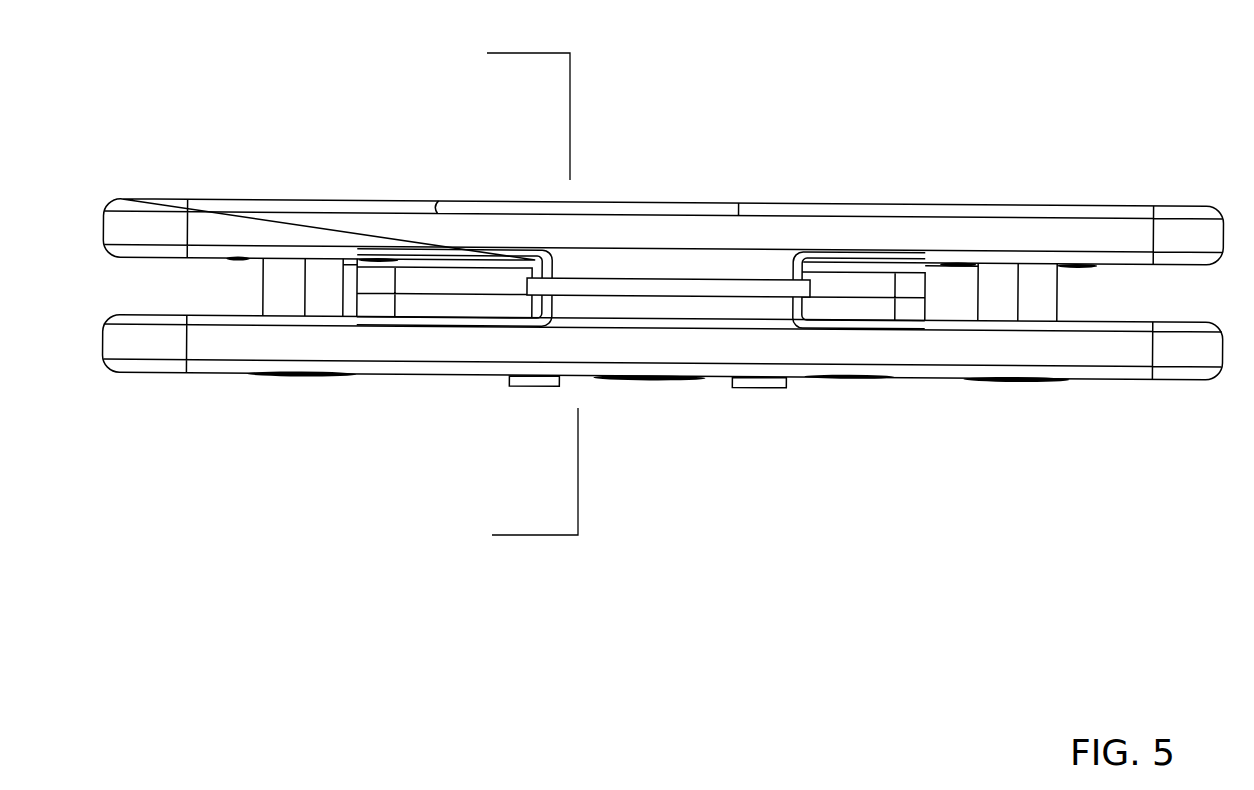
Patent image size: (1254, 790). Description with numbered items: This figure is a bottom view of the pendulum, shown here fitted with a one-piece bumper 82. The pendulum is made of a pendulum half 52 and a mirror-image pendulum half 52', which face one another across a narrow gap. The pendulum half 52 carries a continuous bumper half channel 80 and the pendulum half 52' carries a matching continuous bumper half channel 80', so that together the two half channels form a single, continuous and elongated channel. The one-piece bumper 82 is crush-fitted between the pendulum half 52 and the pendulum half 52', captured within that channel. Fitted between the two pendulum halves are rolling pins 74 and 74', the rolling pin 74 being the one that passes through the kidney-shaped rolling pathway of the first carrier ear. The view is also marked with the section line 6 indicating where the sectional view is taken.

The pendulum half 52 is at (663, 171).
The pendulum half 52' is at (661, 416).
The rolling pin 74 is at (298, 182).
The rolling pin 74' is at (1032, 176).
The continuous bumper half channel 80 is at (833, 181).
The continuous bumper half channel 80' is at (551, 391).
The one-piece bumper 82 is at (633, 288).
The section line 6- 6 is at (518, 294).